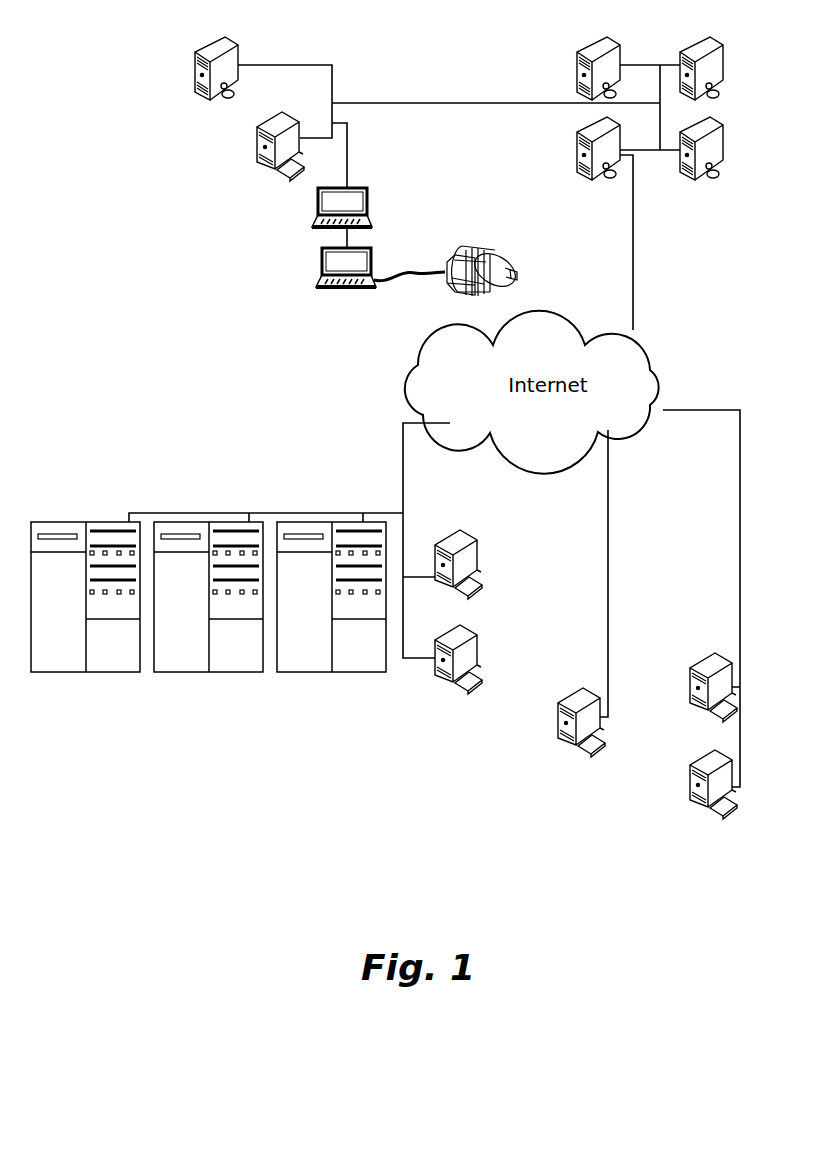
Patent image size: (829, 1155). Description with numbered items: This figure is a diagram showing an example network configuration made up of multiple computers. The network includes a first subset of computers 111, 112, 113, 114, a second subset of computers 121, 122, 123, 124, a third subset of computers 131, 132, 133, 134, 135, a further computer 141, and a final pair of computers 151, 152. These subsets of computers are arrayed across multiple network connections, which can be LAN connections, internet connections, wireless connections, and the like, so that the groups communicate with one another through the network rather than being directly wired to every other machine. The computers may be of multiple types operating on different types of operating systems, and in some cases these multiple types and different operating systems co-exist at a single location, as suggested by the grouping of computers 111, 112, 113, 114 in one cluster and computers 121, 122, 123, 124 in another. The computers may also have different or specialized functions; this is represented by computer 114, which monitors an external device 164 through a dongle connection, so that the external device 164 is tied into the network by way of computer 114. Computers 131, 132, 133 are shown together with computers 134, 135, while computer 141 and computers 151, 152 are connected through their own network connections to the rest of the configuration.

The computer 111 is at (200, 98).
The computer 112 is at (270, 165).
The computer 113 is at (313, 222).
The computer 114 is at (316, 280).
The external device 164 is at (492, 243).
The computer 121 is at (577, 75).
The computer 122 is at (748, 92).
The computer 123 is at (577, 163).
The computer 124 is at (720, 160).
The computer 131 is at (77, 522).
The computer 132 is at (200, 522).
The computer 133 is at (323, 522).
The computer 134 is at (445, 530).
The computer 135 is at (482, 660).
The computer 141 is at (558, 718).
The computer 151 is at (700, 655).
The computer 152 is at (690, 773).